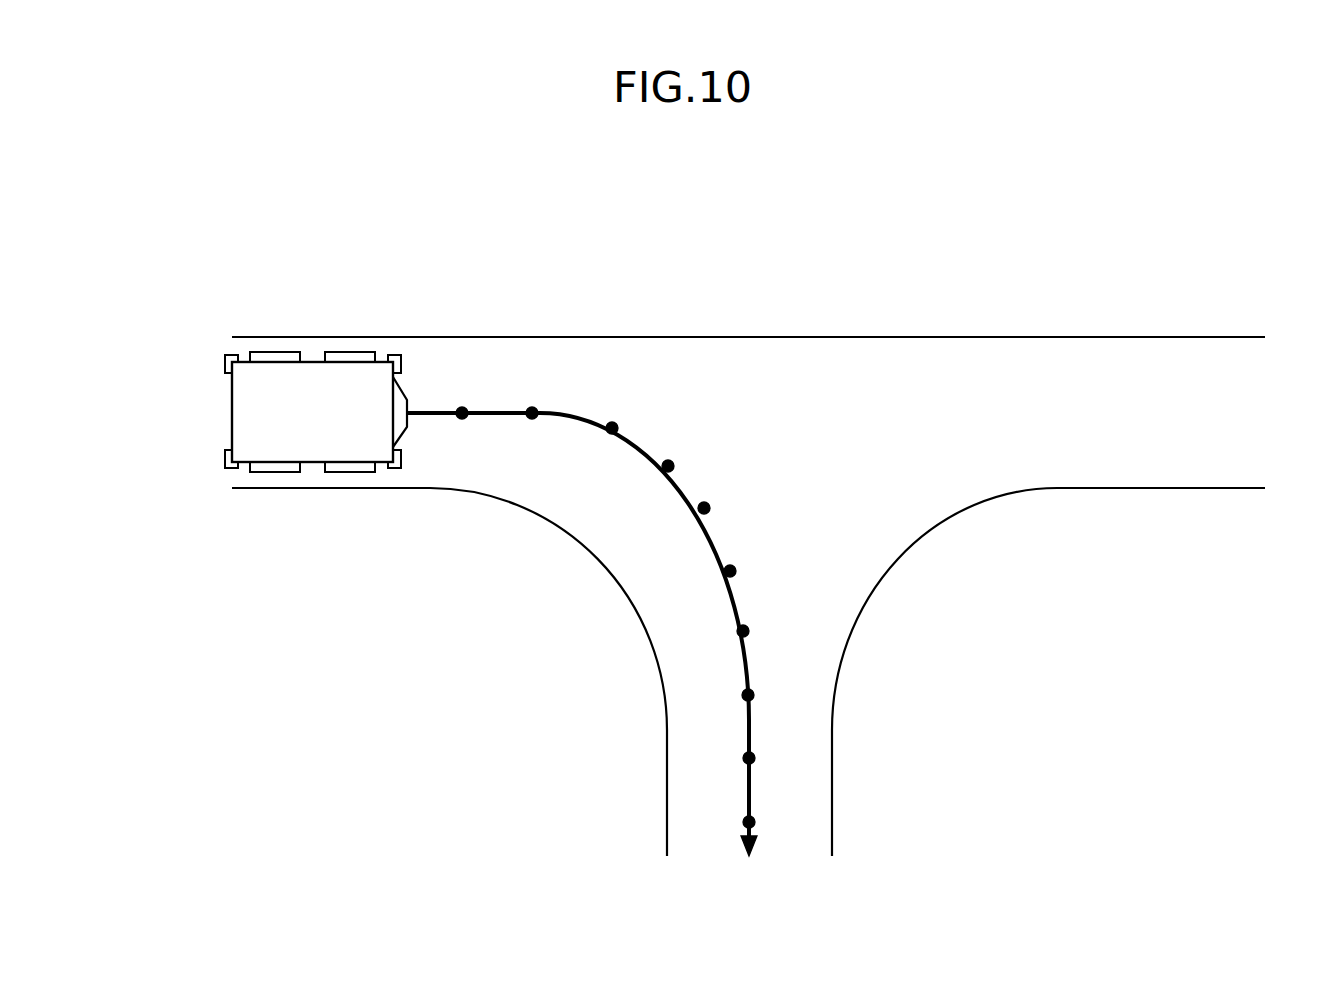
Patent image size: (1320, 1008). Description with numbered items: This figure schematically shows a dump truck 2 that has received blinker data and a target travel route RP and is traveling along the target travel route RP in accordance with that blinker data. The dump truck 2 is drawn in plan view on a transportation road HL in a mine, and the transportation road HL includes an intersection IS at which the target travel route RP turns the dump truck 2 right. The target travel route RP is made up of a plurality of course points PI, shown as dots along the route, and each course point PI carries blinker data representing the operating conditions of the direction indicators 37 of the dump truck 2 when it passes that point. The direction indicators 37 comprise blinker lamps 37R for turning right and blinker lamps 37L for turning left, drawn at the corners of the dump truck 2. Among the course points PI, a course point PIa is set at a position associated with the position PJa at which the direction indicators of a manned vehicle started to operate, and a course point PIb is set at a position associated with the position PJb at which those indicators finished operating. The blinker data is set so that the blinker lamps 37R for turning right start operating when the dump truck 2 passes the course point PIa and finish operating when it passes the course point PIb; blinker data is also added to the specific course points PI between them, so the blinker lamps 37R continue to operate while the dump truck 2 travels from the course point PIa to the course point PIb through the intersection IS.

The dump truck 2 is at (271, 416).
The direction indicators 37 is at (271, 416).
The blinker lamps for turning left 37L is at (225, 363).
The blinker lamps for turning right 37R is at (225, 460).
The intersection IS is at (748, 523).
The transportation road HL is at (420, 480).
The target travel route RP is at (752, 803).
The course points PI is at (668, 466).
The course point PIa is at (437, 334).
The position at which direction indicators of the manned vehicle start to operate PJa is at (462, 406).
The course point PIb is at (854, 750).
The position at which direction indicators of the manned vehicle finish the operatio PJb is at (749, 758).